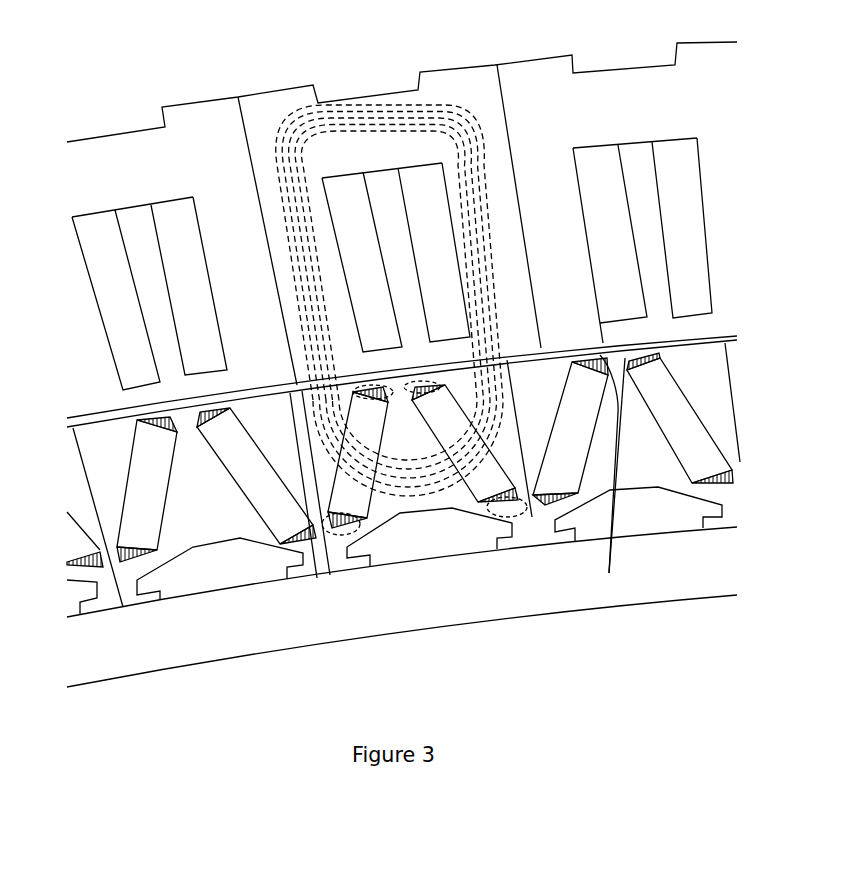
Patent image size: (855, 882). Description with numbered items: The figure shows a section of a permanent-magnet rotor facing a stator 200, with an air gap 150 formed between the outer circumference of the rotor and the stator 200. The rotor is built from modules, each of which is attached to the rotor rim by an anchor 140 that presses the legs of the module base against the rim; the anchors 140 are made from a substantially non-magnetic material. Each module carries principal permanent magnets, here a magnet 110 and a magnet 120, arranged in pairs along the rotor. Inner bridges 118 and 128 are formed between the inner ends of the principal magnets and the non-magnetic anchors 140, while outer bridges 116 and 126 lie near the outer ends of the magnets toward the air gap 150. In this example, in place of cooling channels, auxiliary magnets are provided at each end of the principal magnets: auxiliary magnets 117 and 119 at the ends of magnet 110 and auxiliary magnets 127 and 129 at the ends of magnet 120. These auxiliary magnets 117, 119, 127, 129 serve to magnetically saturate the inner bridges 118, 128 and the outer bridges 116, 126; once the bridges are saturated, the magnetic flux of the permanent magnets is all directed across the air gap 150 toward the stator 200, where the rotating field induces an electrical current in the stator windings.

The stator 200 is at (542, 168).
The air gap 150 is at (695, 338).
The anchor 140 is at (420, 540).
The auxiliary magnet 129 is at (130, 563).
The magnet 120 is at (157, 495).
The auxiliary magnet 127 is at (157, 423).
The magnet 110 is at (253, 500).
The auxiliary magnet 119 is at (203, 410).
The auxiliary magnet 117 is at (317, 578).
The inner bridge 128 is at (338, 535).
The inner bridge 118 is at (532, 517).
The outer bridge 126 is at (609, 573).
The outer bridge 116 is at (628, 378).